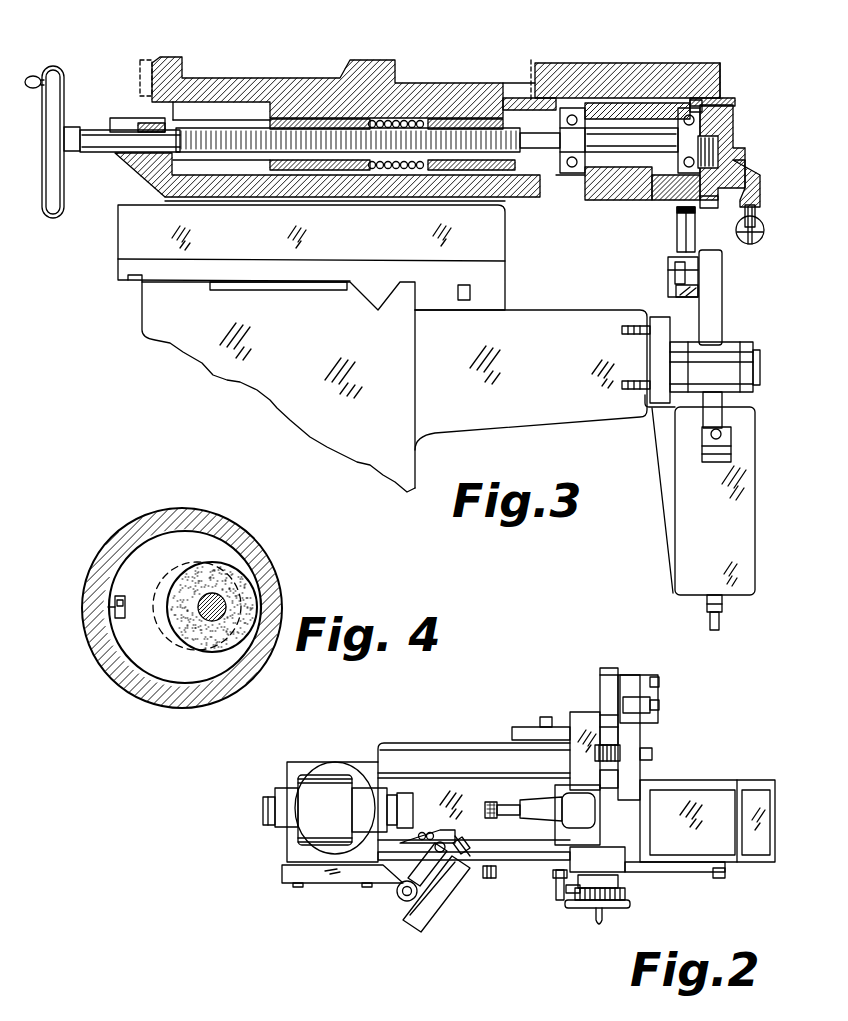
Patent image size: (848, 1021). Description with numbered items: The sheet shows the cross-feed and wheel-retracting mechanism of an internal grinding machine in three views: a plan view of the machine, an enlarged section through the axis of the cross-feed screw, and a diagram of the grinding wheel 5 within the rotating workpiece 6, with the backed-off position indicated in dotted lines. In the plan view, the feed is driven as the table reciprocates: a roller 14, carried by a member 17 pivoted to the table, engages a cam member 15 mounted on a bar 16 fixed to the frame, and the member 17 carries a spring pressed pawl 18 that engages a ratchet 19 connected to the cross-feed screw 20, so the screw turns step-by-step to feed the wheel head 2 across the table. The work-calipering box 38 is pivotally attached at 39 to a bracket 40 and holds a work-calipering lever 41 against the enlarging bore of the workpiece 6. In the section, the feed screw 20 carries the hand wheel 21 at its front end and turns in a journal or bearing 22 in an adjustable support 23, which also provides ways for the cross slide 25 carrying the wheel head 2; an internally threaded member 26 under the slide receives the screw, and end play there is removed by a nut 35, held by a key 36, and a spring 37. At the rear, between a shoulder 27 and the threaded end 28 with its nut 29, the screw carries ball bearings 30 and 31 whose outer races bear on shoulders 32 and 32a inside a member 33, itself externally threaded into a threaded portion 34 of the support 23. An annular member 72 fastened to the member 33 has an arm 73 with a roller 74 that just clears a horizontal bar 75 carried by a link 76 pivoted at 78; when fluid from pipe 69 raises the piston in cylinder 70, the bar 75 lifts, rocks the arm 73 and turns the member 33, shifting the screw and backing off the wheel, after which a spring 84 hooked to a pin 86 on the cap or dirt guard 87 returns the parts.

In FIG. 2, the wheel head 2 is at (562, 808).
In FIG. 4, the grinding wheel 5 is at (258, 571).
In FIG. 4, the workpiece 6 is at (168, 542).
In FIG. 2, the roller 14 is at (555, 872).
In FIG. 2, the cam member 15 is at (488, 880).
In FIG. 2, the bar 16 is at (700, 873).
In FIG. 2, the member 17 is at (566, 889).
In FIG. 2, the spring pressed pawl 18 is at (580, 901).
In FIG. 2, the ratchet 19 is at (622, 896).
In FIG. 3, the cross-feed screw 20 is at (104, 142).
In FIG. 3, the hand wheel 21 is at (50, 220).
In FIG. 3, the journal or bearing 22 is at (146, 124).
In FIG. 3, the adjustable support 23 is at (146, 172).
In FIG. 3, the cross slide or carriage 25 is at (245, 78).
In FIG. 3, the internally threaded member 26 is at (360, 120).
In FIG. 3, the shoulder 27 is at (531, 78).
In FIG. 3, the threaded end 28 is at (716, 148).
In FIG. 3, the nut 29 is at (712, 200).
In FIG. 3, the ball bearing 30 is at (574, 134).
In FIG. 3, the ball bearing 31 is at (735, 115).
In FIG. 3, the shoulder 32 is at (618, 200).
In FIG. 3, the shoulder 32a is at (670, 180).
In FIG. 3, the member 33 is at (622, 112).
In FIG. 3, the threaded portion 34 is at (650, 110).
In FIG. 3, the nut 35 is at (470, 119).
In FIG. 3, the key 36 is at (446, 119).
In FIG. 3, the spring 37 is at (404, 120).
In FIG. 2, the box-like structure 38 is at (418, 925).
In FIG. 2, the pivot 39 is at (398, 896).
In FIG. 2, the bracket 40 is at (335, 878).
In FIG. 4, the work-calipering lever 41 is at (110, 618).
In FIG. 3, the pipe 69 is at (722, 620).
In FIG. 3, the cylinder 70 is at (746, 496).
In FIG. 3, the annular member 72 is at (693, 101).
In FIG. 3, the arm 73 is at (664, 253).
In FIG. 3, the roller 74 is at (697, 237).
In FIG. 3, the horizontal bar 75 is at (676, 289).
In FIG. 3, the link 76 is at (719, 330).
In FIG. 3, the pivot 78 is at (757, 376).
In FIG. 3, the spring 84 is at (766, 236).
In FIG. 3, the pin 86 is at (758, 218).
In FIG. 3, the cap or dirt guard 87 is at (755, 162).